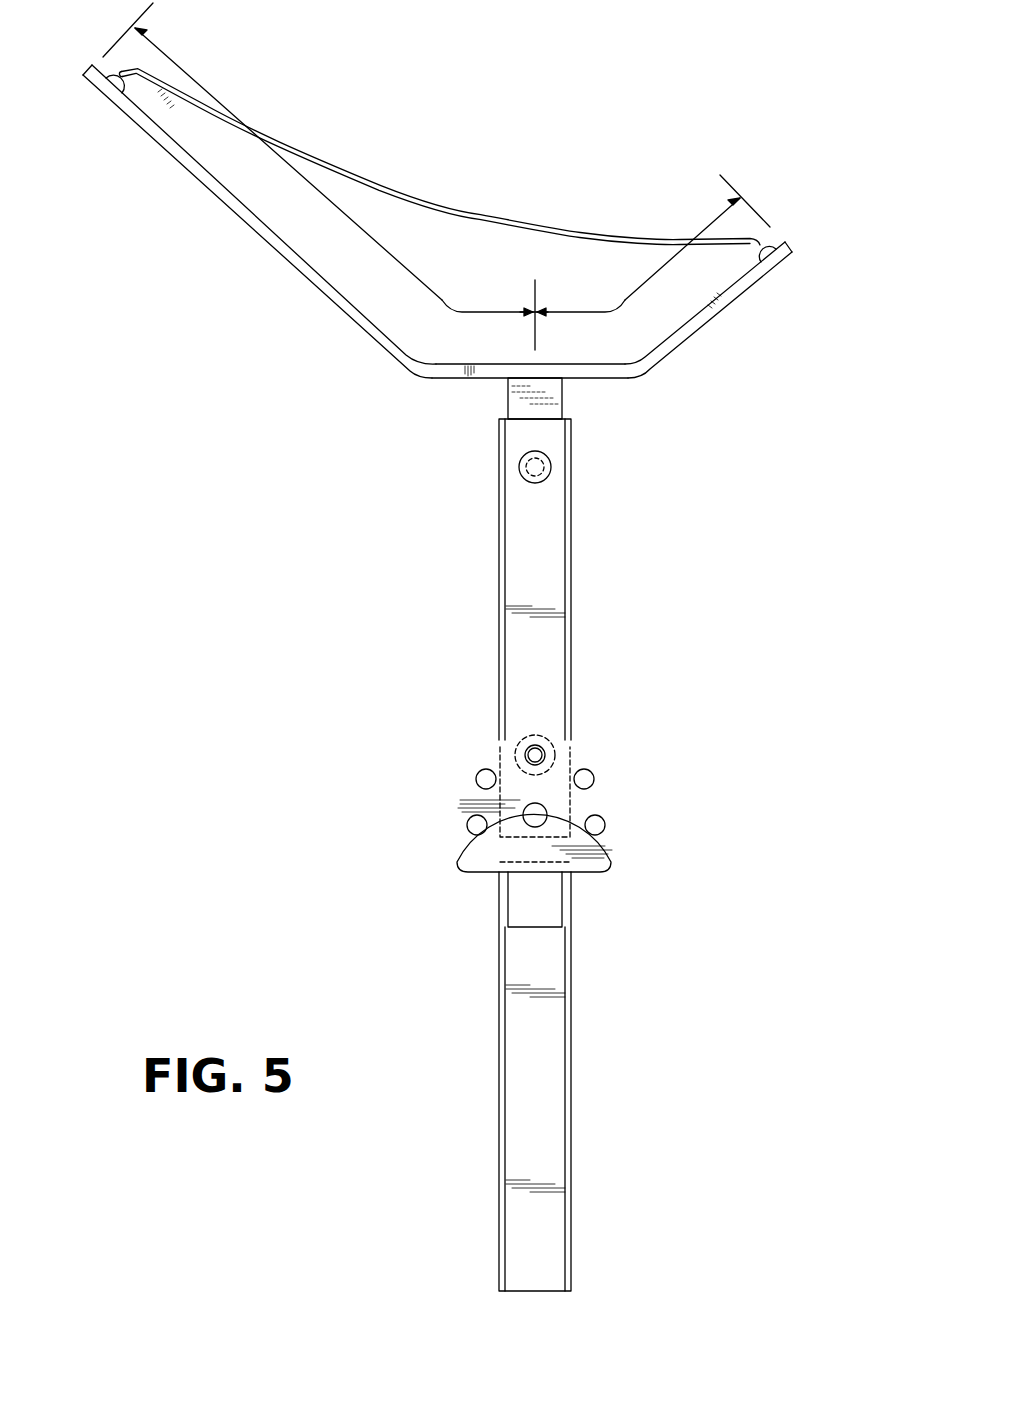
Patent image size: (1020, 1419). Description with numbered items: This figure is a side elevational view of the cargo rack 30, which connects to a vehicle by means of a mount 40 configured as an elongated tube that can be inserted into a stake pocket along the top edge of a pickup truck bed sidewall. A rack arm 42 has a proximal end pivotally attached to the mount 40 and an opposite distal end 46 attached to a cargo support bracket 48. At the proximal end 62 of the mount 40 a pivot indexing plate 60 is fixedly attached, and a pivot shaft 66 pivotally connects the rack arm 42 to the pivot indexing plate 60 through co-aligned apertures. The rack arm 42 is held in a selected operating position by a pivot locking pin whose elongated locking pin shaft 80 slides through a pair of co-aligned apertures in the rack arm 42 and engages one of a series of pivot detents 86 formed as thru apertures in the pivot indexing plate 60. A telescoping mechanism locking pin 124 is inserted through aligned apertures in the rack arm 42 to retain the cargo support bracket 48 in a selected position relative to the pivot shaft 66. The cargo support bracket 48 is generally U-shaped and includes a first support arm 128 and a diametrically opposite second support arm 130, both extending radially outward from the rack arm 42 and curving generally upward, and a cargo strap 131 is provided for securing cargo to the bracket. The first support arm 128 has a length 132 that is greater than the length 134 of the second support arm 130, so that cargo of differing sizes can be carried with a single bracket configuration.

The cargo rack 30 is at (292, 630).
The mount 40 is at (571, 1142).
The rack arm 42 is at (600, 579).
The distal end 46 is at (508, 397).
The cargo support bracket 48 is at (291, 265).
The pivot indexing plate 60 is at (532, 782).
The proximal end 62 is at (498, 890).
The pivot shaft 66 is at (544, 827).
The locking pin shaft 80 is at (543, 747).
The pivot detents 86 is at (527, 747).
The telescoping mechanism locking pin 124 is at (552, 466).
The first support arm 128 is at (152, 143).
The second support arm 130 is at (733, 303).
The cargo strap 131 is at (471, 214).
The length 132 is at (215, 98).
The length 134 is at (706, 226).